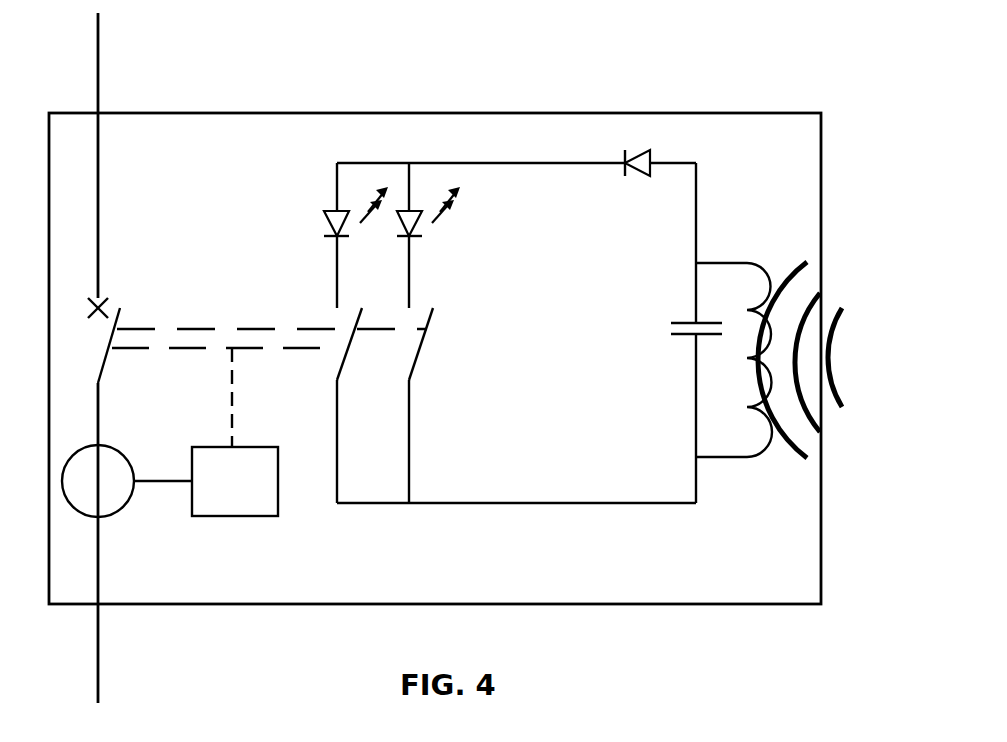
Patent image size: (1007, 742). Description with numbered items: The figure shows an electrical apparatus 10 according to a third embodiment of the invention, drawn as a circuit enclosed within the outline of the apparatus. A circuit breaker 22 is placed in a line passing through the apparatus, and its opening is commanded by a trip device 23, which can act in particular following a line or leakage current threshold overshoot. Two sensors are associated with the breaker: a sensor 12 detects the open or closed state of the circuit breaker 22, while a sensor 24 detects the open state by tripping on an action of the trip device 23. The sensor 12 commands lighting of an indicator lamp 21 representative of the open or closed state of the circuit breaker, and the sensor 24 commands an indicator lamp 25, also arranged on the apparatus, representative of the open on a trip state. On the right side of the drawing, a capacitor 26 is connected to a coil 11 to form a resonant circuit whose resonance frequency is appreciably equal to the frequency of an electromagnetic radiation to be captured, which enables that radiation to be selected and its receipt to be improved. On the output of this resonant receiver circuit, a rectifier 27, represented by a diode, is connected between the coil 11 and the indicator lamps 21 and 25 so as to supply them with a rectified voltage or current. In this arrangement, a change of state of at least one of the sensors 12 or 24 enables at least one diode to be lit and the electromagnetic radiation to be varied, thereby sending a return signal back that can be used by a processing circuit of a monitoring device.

The apparatus 10 is at (348, 112).
The coil 11 is at (757, 267).
The sensor 12 is at (423, 343).
The indicator lamp 21 is at (409, 210).
The circuit breaker 22 is at (114, 301).
The trip device 23 is at (186, 512).
The sensor 24 is at (345, 356).
The indicator lamp 25 is at (337, 210).
The capacitor 26 is at (683, 322).
The rectifier 27 is at (639, 141).